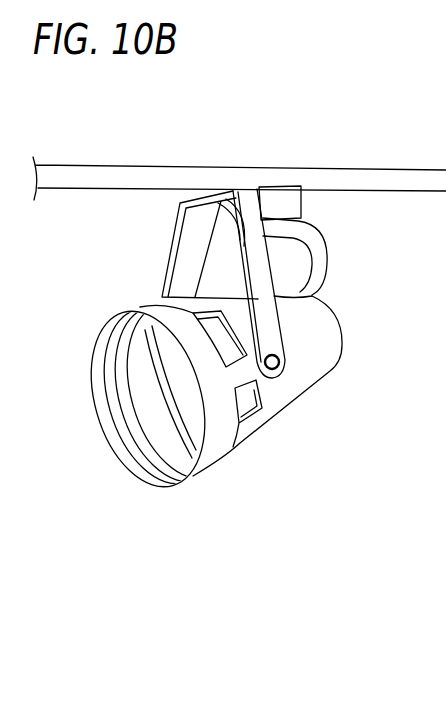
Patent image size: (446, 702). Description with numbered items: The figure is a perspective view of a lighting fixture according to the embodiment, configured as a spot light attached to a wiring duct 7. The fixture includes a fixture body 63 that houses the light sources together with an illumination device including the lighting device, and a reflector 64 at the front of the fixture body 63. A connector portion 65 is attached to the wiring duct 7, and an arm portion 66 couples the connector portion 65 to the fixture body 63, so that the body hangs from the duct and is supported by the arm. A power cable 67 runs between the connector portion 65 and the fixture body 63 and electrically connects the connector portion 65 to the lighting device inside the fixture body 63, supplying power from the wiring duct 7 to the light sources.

The wiring duct 7 is at (383, 174).
The fixture body 63 is at (324, 394).
The reflector 64 is at (116, 456).
The connector portion 65 is at (280, 188).
The arm portion 66 is at (183, 254).
The power cable 67 is at (317, 255).